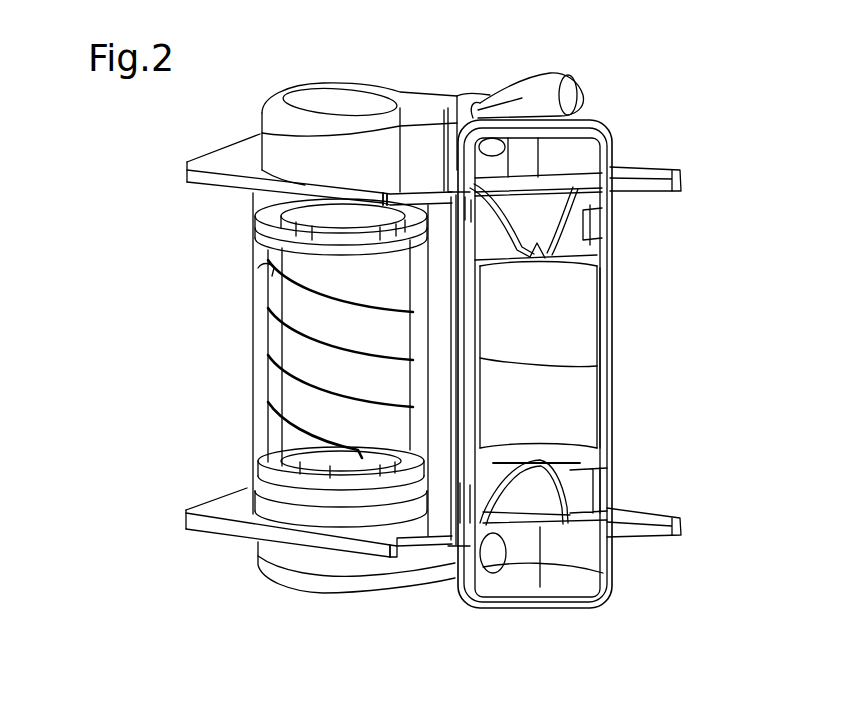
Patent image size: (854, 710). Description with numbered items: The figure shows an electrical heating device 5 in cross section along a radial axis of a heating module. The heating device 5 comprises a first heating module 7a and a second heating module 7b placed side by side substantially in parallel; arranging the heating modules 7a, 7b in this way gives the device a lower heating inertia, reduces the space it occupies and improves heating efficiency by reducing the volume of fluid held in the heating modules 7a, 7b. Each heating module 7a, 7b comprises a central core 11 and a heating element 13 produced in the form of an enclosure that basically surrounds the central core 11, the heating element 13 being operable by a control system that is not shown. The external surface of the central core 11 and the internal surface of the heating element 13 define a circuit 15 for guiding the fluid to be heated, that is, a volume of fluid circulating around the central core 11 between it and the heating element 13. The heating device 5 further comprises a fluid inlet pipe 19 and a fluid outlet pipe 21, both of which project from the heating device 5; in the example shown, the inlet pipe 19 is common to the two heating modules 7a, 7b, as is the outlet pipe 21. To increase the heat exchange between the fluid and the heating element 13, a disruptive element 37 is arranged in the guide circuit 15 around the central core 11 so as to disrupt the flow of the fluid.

The electrical heating device 5 is at (658, 98).
The first heating module 7a is at (232, 572).
The second heating module 7b is at (566, 624).
The central core 11 is at (345, 240).
The heating element 13 is at (266, 316).
The circuit for guiding the fluid 15 is at (268, 274).
The fluid inlet pipe 19 is at (548, 90).
The fluid outlet pipe 21 is at (437, 596).
The disruptive element 37 is at (290, 382).